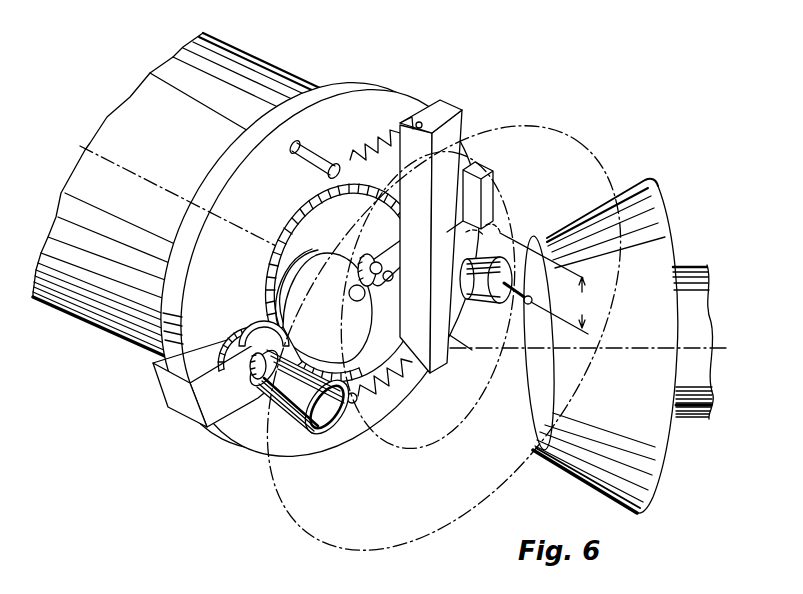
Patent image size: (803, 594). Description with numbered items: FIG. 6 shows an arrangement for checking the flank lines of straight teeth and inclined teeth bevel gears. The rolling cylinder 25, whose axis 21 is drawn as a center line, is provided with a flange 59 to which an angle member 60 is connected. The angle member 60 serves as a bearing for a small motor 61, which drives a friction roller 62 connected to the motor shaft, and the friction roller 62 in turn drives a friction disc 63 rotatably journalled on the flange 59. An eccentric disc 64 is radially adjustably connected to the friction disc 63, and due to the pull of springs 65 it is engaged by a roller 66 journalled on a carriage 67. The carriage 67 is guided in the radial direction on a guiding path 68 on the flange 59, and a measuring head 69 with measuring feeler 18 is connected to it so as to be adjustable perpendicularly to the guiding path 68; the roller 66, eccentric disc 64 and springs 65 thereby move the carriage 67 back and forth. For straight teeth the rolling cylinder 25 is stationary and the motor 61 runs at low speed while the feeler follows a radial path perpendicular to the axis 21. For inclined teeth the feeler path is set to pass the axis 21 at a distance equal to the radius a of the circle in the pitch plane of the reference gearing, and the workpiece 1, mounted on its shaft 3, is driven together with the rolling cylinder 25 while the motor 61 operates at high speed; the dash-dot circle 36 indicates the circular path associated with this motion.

The workpiece 1 is at (661, 247).
The shaft 3 is at (702, 348).
The measuring feeler 18 is at (529, 305).
The axis 21 is at (117, 167).
The rolling cylinder 25 is at (251, 67).
The circular path 36 is at (585, 154).
The flange 59 is at (364, 85).
The angle member 60 is at (213, 408).
The motor 61 is at (320, 424).
The friction roller 62 is at (223, 329).
The friction disc 63 is at (306, 216).
The eccentric disc 64 is at (283, 280).
The springs 65 is at (350, 158).
The roller 66 is at (372, 253).
The carriage 67 is at (453, 110).
The guiding path 68 is at (493, 200).
The measuring head 69 is at (506, 240).
The radius a is at (545, 283).